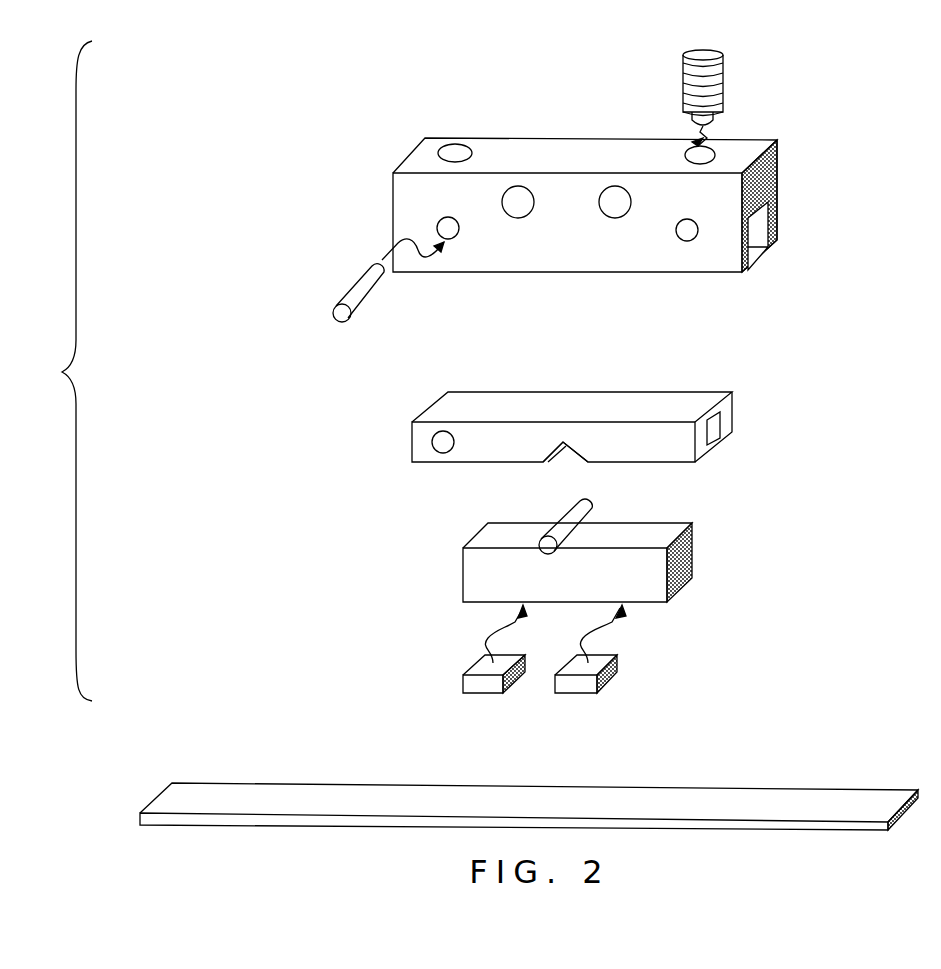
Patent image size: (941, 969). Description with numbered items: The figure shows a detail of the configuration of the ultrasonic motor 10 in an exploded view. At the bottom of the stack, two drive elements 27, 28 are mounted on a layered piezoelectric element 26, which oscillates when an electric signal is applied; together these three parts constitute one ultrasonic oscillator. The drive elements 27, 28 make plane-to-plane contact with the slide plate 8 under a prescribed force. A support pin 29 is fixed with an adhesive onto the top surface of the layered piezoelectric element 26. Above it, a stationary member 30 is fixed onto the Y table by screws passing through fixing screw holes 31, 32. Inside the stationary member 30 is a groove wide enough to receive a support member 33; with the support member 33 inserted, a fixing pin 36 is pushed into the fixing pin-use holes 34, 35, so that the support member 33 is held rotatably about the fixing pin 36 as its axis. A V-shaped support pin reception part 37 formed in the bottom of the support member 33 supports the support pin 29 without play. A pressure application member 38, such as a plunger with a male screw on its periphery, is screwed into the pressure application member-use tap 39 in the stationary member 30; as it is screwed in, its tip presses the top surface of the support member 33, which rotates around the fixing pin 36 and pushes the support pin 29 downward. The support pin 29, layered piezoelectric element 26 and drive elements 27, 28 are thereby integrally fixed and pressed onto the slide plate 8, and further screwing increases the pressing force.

The slide plate 8 is at (152, 800).
The ultrasonic motor 10 is at (61, 371).
The layered piezoelectric element 26 is at (694, 548).
The drive element 27 is at (463, 680).
The drive element 28 is at (619, 670).
The support pin 29 is at (566, 516).
The stationary member 30 is at (405, 165).
The fixing screw hole 31 is at (518, 186).
The fixing screw hole 32 is at (615, 186).
The support member 33 is at (415, 412).
The fixing pin-use hole 34 is at (432, 442).
The fixing pin-use hole 35 is at (437, 226).
The fixing pin 36 is at (352, 295).
The V-shaped support pin reception part 37 is at (566, 446).
The pressure application member 38 is at (725, 58).
The pressure application member-use tap 39 is at (714, 153).